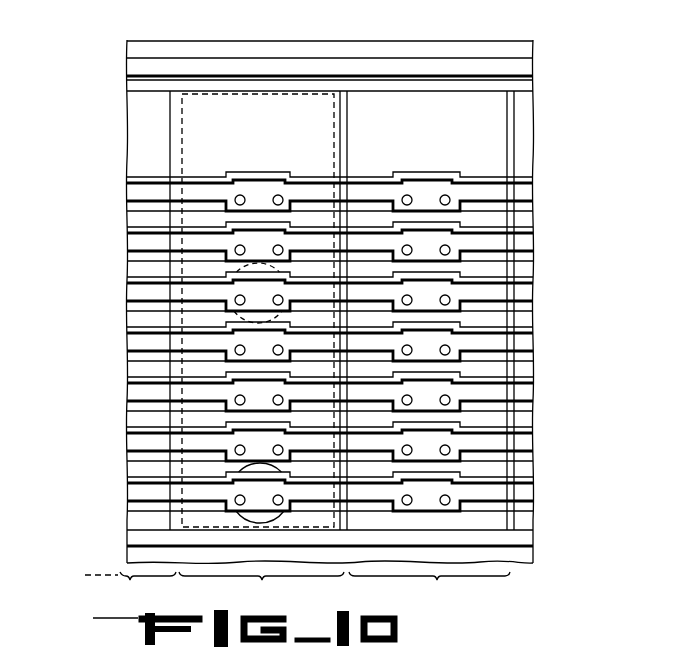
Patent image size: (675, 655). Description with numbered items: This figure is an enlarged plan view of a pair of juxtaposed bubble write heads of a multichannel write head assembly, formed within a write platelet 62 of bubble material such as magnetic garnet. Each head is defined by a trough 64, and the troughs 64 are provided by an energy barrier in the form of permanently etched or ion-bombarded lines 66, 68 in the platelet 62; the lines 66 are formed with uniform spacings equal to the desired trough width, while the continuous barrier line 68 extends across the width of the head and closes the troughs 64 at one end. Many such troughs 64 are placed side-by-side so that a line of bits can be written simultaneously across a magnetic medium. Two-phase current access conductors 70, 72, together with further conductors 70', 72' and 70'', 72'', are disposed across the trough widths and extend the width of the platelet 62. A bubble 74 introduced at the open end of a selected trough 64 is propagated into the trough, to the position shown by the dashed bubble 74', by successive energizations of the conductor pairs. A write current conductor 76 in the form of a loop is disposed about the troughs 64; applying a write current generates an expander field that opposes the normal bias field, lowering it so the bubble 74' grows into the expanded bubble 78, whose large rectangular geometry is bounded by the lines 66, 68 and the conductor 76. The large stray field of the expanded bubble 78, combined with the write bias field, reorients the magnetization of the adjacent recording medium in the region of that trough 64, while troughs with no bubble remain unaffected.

The write platelet 62 is at (127, 156).
The troughs 64 is at (297, 591).
The energy barrier lines 66 is at (171, 418).
The continuous barrier line 68 is at (405, 88).
The conductor 70 is at (361, 499).
The conductor 70' is at (365, 446).
The conductor 70'' is at (367, 200).
The conductor 72 is at (361, 491).
The conductor 72' is at (365, 437).
The conductor 72'' is at (367, 191).
The bubble 74 is at (283, 490).
The dashed bubble 74' is at (234, 289).
The write current conductor 76 is at (217, 67).
The expanded bubble 78 is at (333, 107).